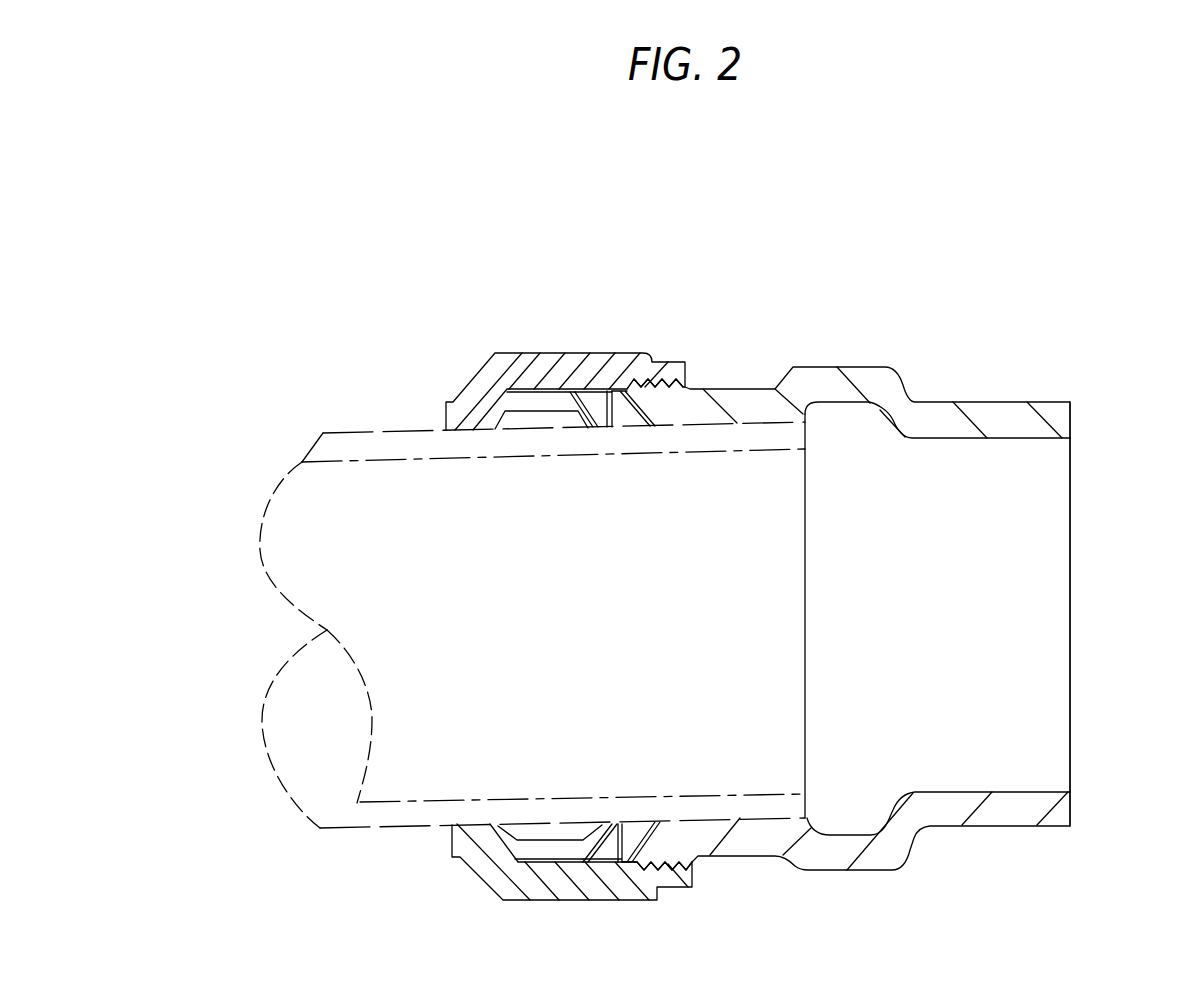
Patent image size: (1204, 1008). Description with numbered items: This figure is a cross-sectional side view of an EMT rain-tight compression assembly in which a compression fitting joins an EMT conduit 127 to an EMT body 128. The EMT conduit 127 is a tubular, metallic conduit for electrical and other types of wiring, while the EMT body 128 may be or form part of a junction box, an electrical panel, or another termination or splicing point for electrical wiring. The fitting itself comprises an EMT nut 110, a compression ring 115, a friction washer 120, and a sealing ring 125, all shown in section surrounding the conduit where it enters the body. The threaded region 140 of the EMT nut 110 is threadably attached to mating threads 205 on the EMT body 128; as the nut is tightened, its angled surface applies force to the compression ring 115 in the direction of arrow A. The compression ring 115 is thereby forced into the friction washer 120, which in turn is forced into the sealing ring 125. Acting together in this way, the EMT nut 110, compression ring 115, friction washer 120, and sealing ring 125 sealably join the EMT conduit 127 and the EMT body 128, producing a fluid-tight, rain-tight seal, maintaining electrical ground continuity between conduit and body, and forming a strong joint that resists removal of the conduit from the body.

The EMT conduit 127 is at (358, 432).
The arrow A is at (556, 568).
The EMT nut 110 is at (538, 351).
The compression ring 115 is at (545, 391).
The friction washer 120 is at (605, 383).
The sealing ring 125 is at (627, 413).
The threaded region 140 is at (697, 387).
The mating threads 205 is at (702, 388).
The EMT body 128 is at (1070, 505).